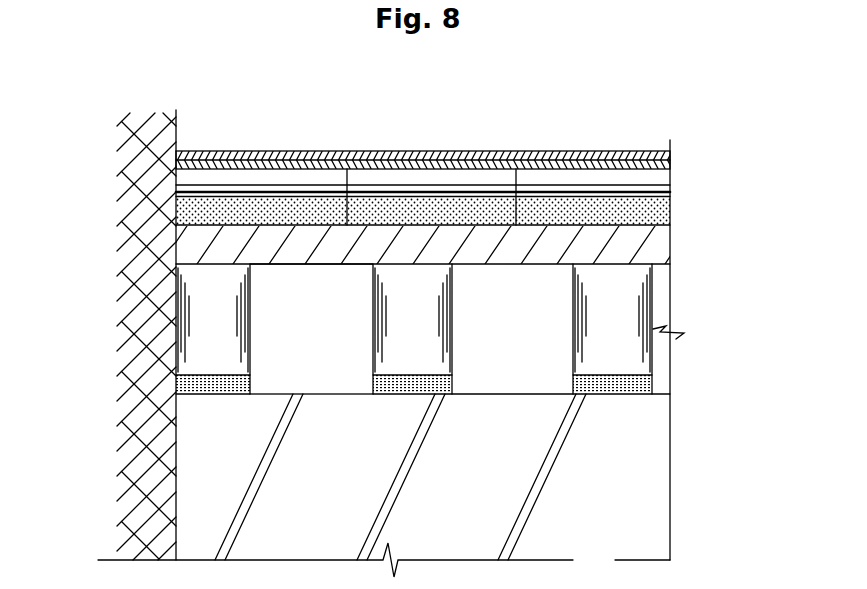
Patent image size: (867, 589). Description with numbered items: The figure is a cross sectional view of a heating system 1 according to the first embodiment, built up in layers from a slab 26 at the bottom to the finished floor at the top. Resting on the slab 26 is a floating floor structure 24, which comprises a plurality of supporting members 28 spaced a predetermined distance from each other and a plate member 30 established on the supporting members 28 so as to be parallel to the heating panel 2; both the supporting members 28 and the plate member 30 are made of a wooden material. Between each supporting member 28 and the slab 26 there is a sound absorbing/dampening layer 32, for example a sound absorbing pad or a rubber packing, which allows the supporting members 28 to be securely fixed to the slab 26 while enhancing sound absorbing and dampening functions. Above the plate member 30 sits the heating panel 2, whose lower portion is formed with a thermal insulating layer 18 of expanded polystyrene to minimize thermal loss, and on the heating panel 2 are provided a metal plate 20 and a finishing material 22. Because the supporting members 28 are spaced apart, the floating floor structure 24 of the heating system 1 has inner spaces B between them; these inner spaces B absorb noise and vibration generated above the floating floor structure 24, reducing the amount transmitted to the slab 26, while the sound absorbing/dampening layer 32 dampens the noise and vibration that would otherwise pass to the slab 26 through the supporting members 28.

The heating system 1 is at (692, 127).
The heating panel 2 is at (657, 182).
The thermal insulating layer 18 is at (668, 217).
The metal plate 20 is at (392, 152).
The finishing material 22 is at (328, 150).
The floating floor structure 24 is at (652, 317).
The slab 26 is at (652, 509).
The supporting member 28 is at (188, 330).
The plate member 30 is at (190, 246).
The sound absorbing/dampening layer 32 is at (652, 383).
The inner space B is at (292, 363).